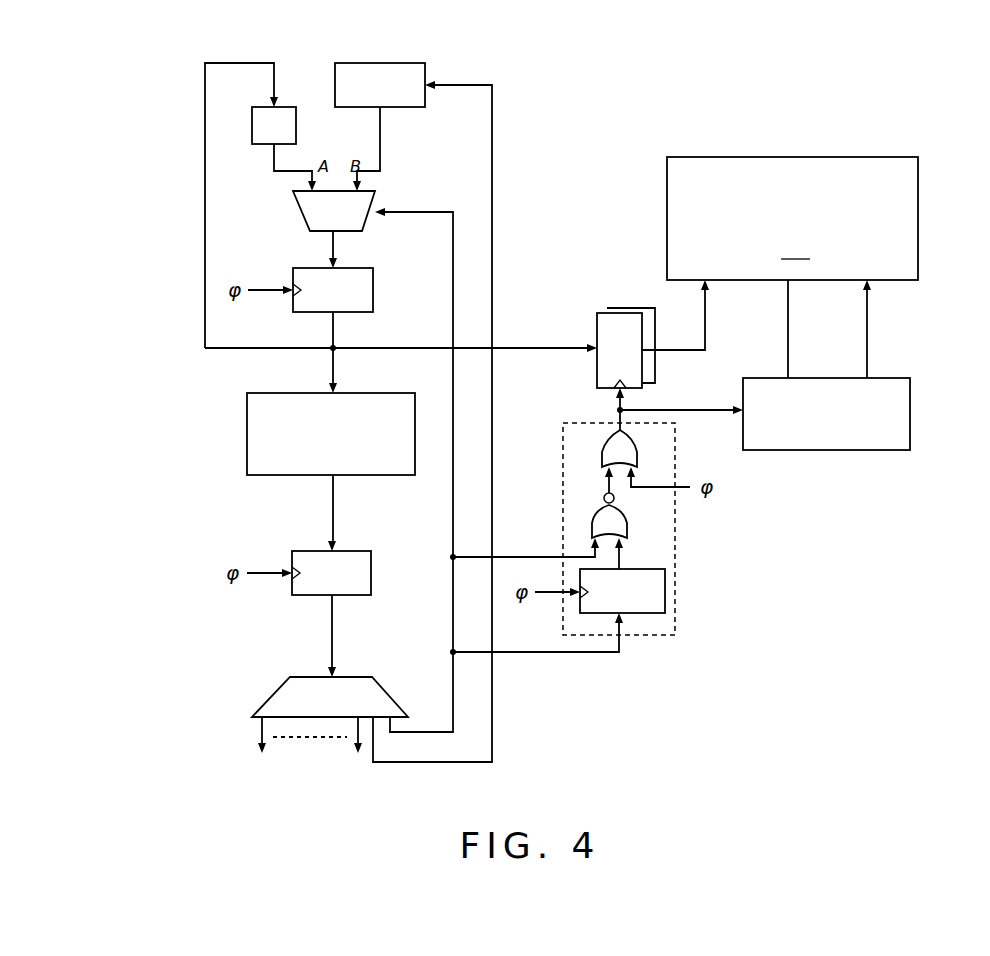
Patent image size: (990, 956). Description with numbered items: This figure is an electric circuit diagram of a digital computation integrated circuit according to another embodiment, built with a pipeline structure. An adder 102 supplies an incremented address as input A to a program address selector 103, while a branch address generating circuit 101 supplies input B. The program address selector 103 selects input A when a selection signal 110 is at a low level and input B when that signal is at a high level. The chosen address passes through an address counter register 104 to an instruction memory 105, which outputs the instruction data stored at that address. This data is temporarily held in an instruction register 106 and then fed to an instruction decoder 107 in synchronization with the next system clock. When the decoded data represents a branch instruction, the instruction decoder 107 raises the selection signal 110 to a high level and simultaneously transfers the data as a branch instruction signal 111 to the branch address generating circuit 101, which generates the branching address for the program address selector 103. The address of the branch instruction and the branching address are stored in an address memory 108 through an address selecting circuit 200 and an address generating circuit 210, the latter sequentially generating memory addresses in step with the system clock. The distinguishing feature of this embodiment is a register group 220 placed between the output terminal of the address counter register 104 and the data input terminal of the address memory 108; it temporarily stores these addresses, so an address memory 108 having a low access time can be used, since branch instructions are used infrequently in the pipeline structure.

The branch address generating circuit 101 is at (430, 80).
The adder 102 is at (252, 135).
The program address selector 103 is at (303, 217).
The address counter register 104 is at (293, 278).
The instruction memory 105 is at (247, 428).
The instruction register 106 is at (292, 558).
The instruction decoder 107 is at (271, 697).
The address memory 108 is at (805, 157).
The selection signal 110 is at (453, 677).
The branch instruction signal 111 is at (492, 720).
The address selecting circuit 200 is at (675, 615).
The address generating circuit 210 is at (910, 400).
The register group 220 is at (597, 311).